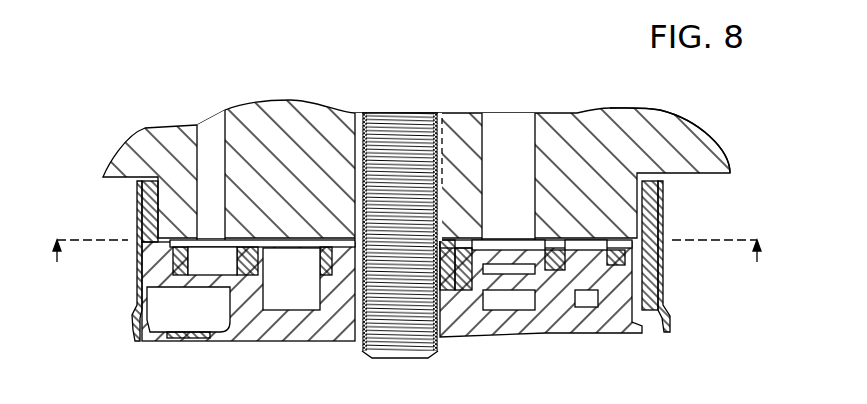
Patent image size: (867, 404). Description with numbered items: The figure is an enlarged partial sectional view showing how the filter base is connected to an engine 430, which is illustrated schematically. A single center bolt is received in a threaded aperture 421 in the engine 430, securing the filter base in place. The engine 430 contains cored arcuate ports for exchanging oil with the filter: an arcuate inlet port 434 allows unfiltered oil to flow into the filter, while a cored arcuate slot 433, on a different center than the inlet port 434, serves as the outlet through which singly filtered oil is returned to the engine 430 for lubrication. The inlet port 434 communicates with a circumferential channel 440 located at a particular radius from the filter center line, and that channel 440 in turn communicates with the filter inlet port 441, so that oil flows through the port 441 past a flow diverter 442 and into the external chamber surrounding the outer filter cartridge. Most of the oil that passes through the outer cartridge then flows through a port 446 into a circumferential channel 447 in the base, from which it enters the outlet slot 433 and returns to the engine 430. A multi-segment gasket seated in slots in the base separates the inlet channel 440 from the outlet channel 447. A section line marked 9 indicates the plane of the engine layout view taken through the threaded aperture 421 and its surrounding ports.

The threaded aperture 421 is at (437, 133).
The engine 430 is at (720, 135).
The cored arcuate slot 433 is at (535, 115).
The arcuate port 434 is at (210, 157).
The circumferential channel 440 is at (587, 242).
The filter inlet port 441 is at (213, 268).
The flow diverter 442 is at (187, 343).
The port 446 is at (297, 323).
The circumferential channel 447 is at (282, 243).
The section line 9- 9 is at (409, 269).